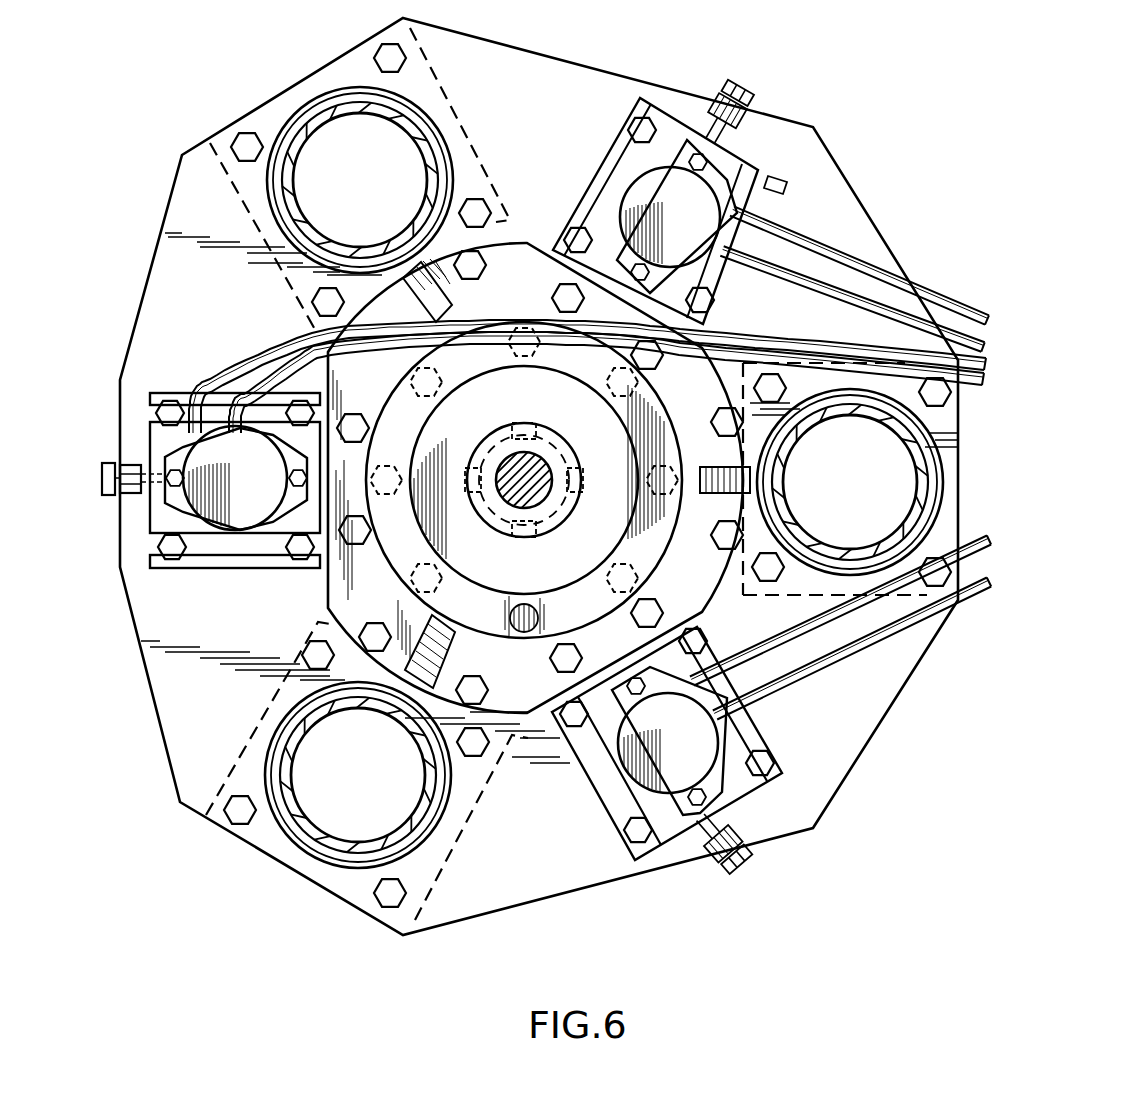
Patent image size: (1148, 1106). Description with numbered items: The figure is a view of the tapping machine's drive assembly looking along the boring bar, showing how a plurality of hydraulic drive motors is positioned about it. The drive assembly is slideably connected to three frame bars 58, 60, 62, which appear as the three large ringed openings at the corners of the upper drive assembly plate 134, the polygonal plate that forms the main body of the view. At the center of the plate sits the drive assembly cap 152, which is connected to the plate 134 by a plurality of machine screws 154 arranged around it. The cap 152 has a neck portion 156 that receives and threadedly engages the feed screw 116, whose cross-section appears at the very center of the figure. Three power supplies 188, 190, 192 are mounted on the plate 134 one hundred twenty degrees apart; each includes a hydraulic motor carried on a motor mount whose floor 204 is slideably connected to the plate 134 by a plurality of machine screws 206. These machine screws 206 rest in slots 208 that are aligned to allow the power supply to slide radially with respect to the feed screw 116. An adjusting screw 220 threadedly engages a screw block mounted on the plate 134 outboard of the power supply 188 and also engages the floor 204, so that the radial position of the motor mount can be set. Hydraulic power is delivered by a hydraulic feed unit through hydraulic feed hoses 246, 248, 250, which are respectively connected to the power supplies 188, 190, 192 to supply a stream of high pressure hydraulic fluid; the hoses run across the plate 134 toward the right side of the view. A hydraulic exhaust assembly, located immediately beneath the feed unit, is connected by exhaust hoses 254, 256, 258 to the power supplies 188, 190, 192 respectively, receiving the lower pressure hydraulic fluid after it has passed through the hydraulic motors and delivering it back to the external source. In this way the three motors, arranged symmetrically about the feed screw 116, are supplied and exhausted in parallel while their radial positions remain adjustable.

The frame bar 58 is at (326, 118).
The frame bar 60 is at (348, 852).
The frame bar 62 is at (922, 508).
The feed screw 116 is at (534, 497).
The upper drive assembly plate 134 is at (858, 722).
The drive assembly cap 152 is at (491, 410).
The machine screws 154 is at (482, 263).
The neck portion 156 is at (562, 455).
The power supply 188 is at (725, 794).
The power supply 190 is at (740, 167).
The power supply 192 is at (152, 440).
The floor 204 is at (618, 812).
The machine screws 206 is at (694, 633).
The slots 208 is at (772, 788).
The adjusting screw 220 is at (738, 870).
The hydraulic feed hose 246 is at (837, 603).
The hydraulic feed hose 248 is at (828, 246).
The hydraulic feed hose 250 is at (218, 378).
The exhaust hose 254 is at (903, 622).
The exhaust hose 256 is at (833, 302).
The exhaust hose 258 is at (265, 358).